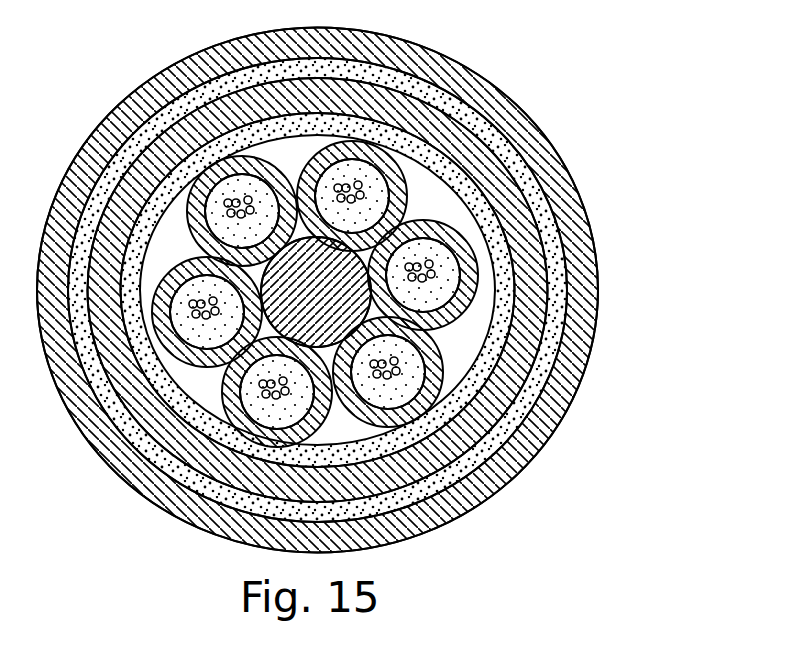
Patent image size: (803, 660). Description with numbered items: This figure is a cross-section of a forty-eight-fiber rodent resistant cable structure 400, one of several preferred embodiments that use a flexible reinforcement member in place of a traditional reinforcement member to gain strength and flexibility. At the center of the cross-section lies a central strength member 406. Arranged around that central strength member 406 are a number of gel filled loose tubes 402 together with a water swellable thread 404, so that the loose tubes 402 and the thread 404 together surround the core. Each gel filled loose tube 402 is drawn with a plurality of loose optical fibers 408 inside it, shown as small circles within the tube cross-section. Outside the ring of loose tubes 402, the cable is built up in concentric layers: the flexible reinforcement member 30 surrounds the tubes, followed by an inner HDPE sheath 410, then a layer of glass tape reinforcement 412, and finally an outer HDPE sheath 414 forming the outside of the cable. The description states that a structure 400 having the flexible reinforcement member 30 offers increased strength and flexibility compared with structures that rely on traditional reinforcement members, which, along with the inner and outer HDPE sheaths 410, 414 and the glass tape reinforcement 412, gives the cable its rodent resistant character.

The rodent resistant cable structure 400 is at (171, 44).
The gel filled loose tube 402 is at (307, 164).
The water swellable thread 404 is at (363, 265).
The central strength member 406 is at (333, 310).
The loose optical fibers 408 is at (357, 403).
The inner HDPE sheath 410 is at (542, 262).
The layer of glass tape reinforcement 412 is at (498, 128).
The outer HDPE sheath 414 is at (496, 92).
The flexible reinforcement member 30 is at (487, 211).